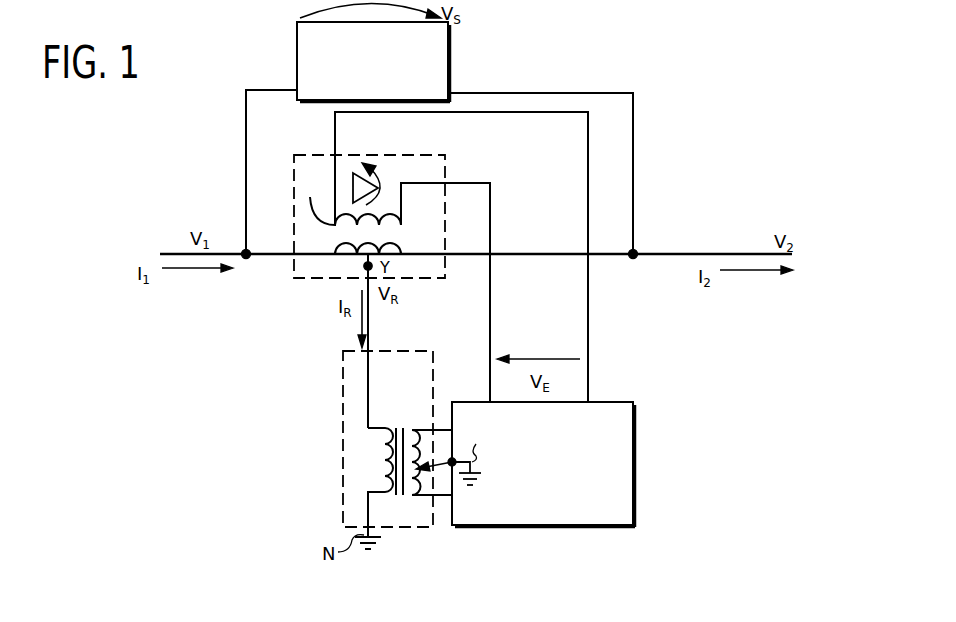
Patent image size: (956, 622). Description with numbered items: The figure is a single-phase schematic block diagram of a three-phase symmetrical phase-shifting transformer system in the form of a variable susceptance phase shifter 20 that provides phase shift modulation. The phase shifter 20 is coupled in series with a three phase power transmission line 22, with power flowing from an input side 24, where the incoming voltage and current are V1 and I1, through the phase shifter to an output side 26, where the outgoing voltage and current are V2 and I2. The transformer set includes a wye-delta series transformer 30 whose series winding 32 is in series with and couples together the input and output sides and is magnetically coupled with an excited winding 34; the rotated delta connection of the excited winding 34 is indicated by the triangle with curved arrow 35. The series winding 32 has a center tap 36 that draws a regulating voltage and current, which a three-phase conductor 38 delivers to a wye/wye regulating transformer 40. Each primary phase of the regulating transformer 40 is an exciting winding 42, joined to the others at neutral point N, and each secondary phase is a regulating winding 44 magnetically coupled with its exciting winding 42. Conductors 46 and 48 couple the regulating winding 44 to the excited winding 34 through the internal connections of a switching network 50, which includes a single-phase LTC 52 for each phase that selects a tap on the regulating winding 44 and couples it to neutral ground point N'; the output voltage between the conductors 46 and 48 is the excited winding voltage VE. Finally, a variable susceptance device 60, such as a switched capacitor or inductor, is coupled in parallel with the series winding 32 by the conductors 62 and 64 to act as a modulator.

The variable susceptance phase shifter 20 is at (216, 397).
The three phase power transmission line 22 is at (172, 253).
The input side 24 is at (227, 253).
The output side 26 is at (718, 253).
The wye-delta series transformer 30 is at (302, 236).
The series winding 32 is at (341, 250).
The excited winding 34 is at (349, 200).
The triangle with curved arrow 35 is at (382, 183).
The center tap 36 is at (364, 257).
The three-phase conductor 38 is at (372, 331).
The regulating transformer 40 is at (356, 490).
The exciting winding 42 is at (380, 449).
The regulating winding 44 is at (414, 497).
The conductor 46 is at (490, 296).
The conductor 48 is at (588, 318).
The switching network 50 is at (582, 512).
The single-phase LTC 52 is at (441, 500).
The variable susceptance device 60 is at (432, 70).
The three-phase conductor 62 is at (246, 117).
The three-phase conductor 64 is at (633, 120).